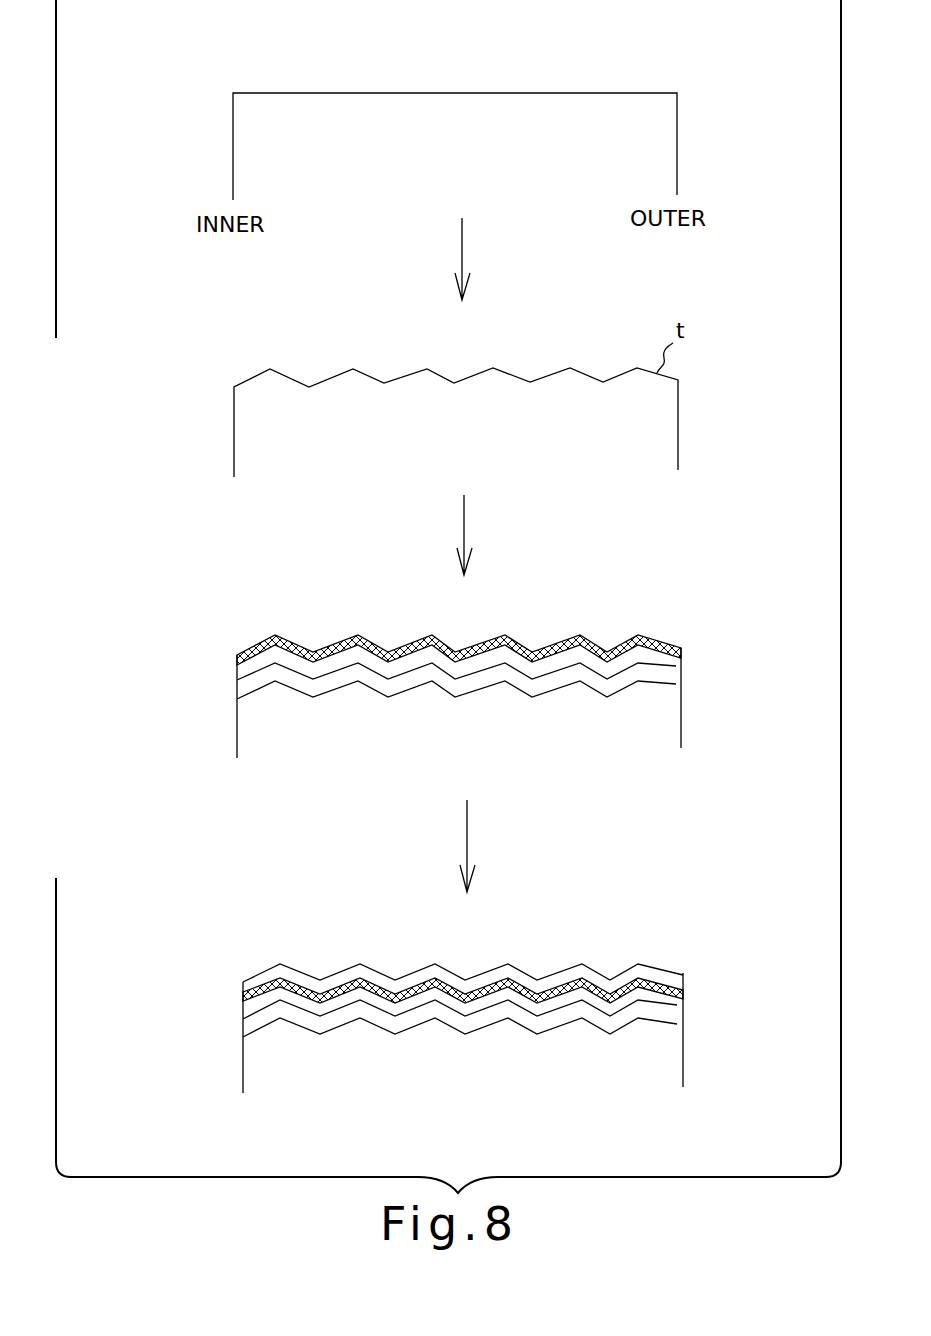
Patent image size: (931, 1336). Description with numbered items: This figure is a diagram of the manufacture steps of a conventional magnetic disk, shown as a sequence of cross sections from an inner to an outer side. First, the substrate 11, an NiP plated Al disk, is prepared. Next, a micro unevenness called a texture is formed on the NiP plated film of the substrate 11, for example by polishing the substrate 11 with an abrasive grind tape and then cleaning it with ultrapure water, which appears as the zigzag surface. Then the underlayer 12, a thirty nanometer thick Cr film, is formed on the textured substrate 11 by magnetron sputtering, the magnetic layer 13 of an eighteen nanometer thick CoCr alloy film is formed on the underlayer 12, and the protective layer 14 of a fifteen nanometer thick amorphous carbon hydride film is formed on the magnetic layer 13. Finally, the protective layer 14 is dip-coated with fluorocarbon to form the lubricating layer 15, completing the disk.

The substrate 11 is at (660, 141).
The underlayer 12 is at (670, 683).
The magnetic layer 13 is at (670, 665).
The protective layer 14 is at (681, 652).
The lubricating layer 15 is at (672, 975).